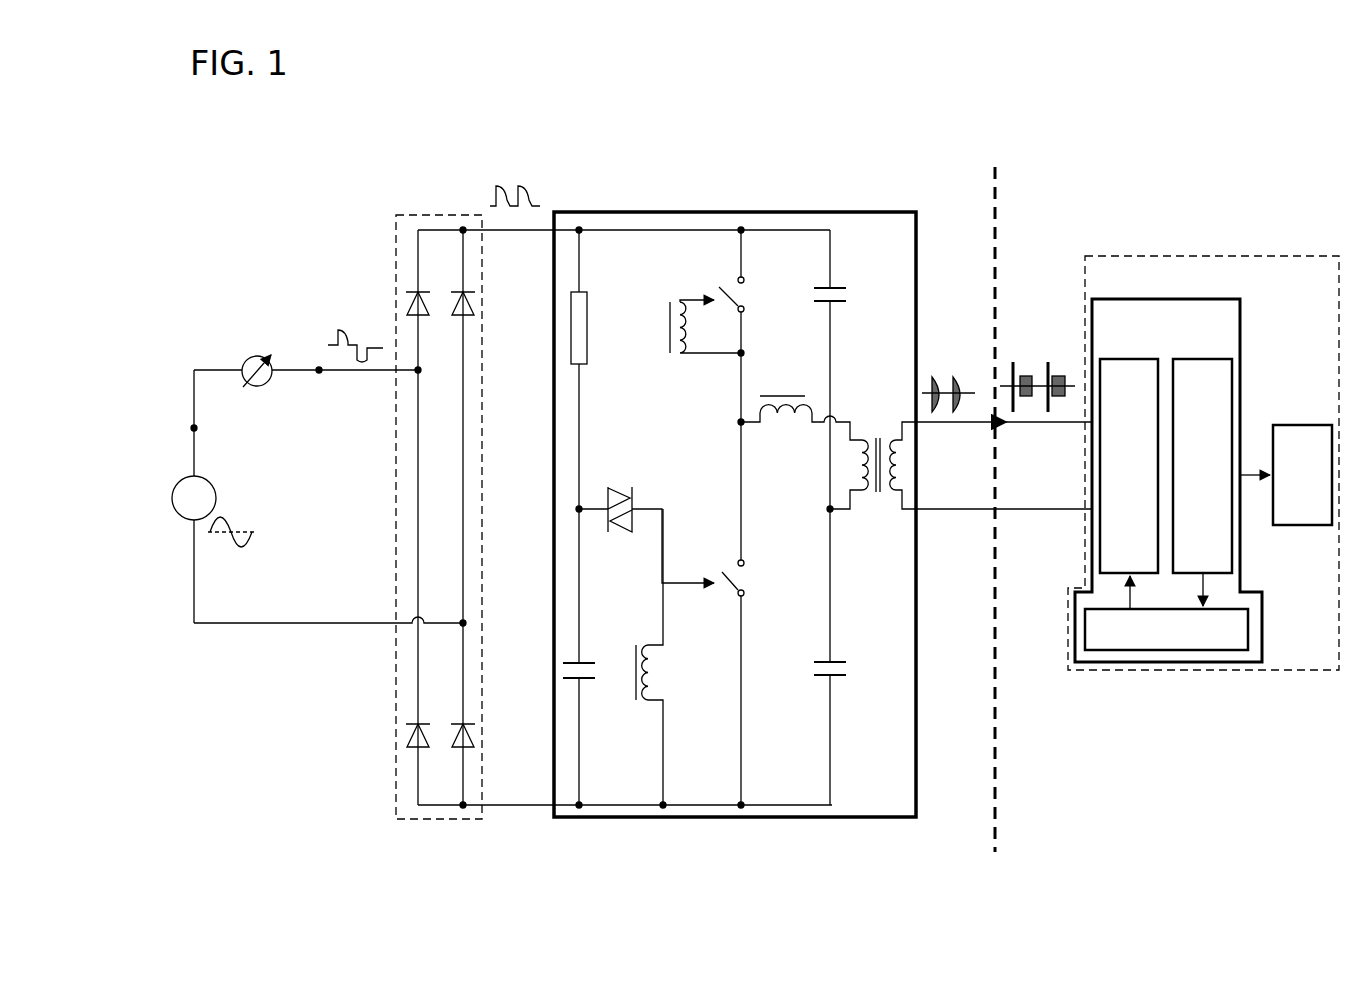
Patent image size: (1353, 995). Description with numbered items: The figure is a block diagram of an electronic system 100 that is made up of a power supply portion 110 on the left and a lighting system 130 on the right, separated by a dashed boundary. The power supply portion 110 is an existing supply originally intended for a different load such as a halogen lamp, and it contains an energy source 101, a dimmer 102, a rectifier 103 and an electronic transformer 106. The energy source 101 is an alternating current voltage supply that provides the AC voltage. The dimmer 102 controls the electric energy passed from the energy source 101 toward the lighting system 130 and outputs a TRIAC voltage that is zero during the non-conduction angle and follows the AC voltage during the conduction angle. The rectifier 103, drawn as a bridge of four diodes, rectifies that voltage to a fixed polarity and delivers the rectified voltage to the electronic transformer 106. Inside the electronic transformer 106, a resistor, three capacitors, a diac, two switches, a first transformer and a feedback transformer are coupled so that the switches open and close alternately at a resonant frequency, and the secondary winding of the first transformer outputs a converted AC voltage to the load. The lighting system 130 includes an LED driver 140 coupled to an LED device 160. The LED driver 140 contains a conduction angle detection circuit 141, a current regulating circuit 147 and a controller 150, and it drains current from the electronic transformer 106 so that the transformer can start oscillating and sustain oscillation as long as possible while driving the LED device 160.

The electronic system 100 is at (1130, 90).
The energy source 101 is at (216, 488).
The dimmer 102 is at (252, 356).
The rectifier 103 is at (424, 214).
The electronic transformer 106 is at (778, 212).
The power supply portion 110 is at (885, 158).
The lighting system 130 is at (1239, 256).
The LED driver 140 is at (1168, 480).
The conduction angle detection circuit 141 is at (1202, 482).
The current regulating circuit 147 is at (1129, 484).
The controller 150 is at (1166, 629).
The LED device 160 is at (1286, 475).